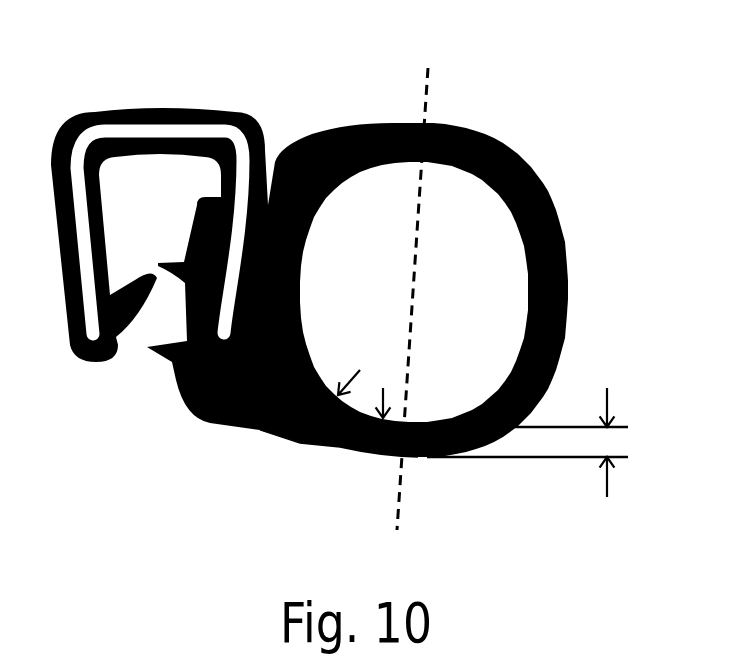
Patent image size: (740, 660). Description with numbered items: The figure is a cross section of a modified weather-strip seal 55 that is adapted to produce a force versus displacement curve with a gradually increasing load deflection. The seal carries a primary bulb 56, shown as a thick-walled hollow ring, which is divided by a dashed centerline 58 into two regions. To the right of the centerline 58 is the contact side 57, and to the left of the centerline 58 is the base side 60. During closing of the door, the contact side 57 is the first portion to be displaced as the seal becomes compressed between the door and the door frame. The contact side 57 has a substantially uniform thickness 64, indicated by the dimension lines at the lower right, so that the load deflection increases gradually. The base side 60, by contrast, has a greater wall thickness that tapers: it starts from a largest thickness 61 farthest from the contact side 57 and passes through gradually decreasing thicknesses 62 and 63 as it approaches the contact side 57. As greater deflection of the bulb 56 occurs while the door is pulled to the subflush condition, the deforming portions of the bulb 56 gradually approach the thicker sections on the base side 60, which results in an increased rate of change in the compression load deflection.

The seal 55 is at (272, 102).
The primary bulb 56 is at (508, 143).
The contact side 57 is at (567, 262).
The centerline 58 is at (424, 88).
The base side 60 is at (303, 268).
The largest thickness 61 is at (318, 365).
The decreasing thickness 62 is at (300, 445).
The decreasing thickness 63 is at (380, 458).
The uniform thickness 64 is at (610, 390).